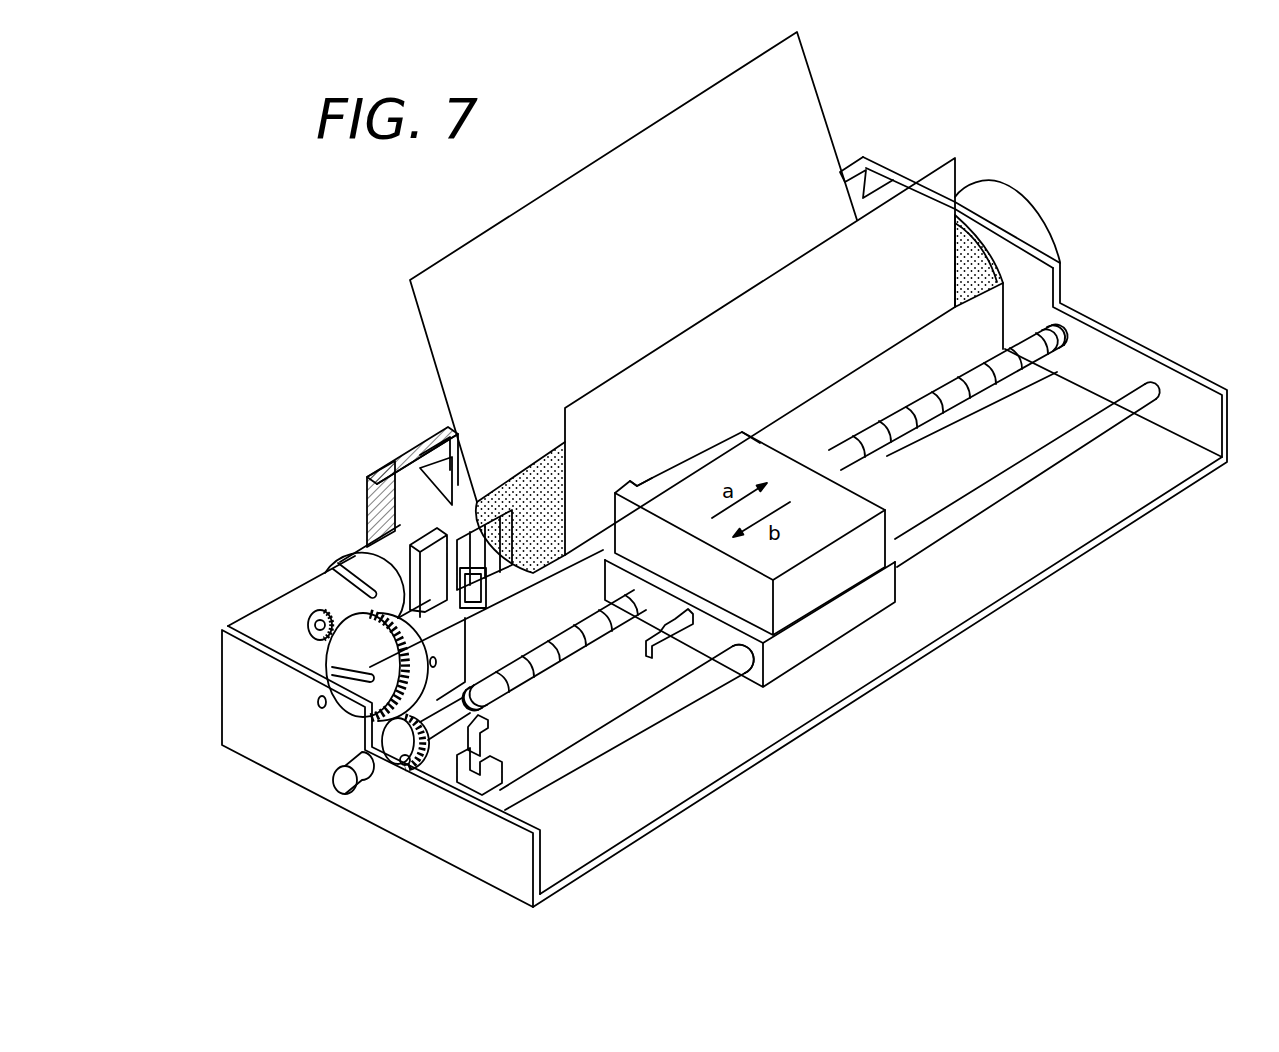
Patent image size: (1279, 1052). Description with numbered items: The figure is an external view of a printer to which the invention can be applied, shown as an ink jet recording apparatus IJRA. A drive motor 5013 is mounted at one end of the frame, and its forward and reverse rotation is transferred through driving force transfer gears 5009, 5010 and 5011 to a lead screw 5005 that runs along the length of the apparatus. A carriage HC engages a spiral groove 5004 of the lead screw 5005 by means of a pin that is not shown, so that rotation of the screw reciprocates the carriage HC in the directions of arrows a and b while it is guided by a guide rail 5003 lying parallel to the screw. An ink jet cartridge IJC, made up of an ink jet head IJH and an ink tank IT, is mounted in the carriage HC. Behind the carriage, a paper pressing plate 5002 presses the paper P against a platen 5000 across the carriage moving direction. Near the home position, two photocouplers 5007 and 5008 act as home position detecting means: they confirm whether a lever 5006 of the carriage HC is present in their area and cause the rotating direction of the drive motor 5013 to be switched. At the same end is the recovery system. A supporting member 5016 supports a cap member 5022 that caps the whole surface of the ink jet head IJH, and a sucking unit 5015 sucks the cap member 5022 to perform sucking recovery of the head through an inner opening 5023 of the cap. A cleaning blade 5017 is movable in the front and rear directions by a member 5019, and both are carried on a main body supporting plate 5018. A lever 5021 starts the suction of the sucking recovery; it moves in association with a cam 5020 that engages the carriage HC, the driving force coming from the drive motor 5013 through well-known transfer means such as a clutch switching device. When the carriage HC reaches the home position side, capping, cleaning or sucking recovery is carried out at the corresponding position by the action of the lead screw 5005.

The paper P is at (812, 110).
The ink jet recording apparatus IJRA is at (915, 153).
The platen 5000 is at (980, 267).
The paper pressing plate 5002 is at (890, 372).
The guide rail 5003 is at (627, 725).
The spiral groove 5004 is at (552, 618).
The lead screw 5005 is at (657, 642).
The lever 5006 is at (723, 653).
The photocoupler 5007 is at (482, 743).
The photocoupler 5008 is at (478, 787).
The driving force transfer gear 5009 is at (407, 750).
The driving force transfer gear 5010 is at (372, 707).
The driving force transfer gear 5011 is at (340, 655).
The drive motor 5013 is at (427, 547).
The sucking unit 5015 is at (367, 492).
The supporting member 5016 is at (430, 475).
The cleaning blade 5017 is at (493, 503).
The main body supporting plate 5018 is at (382, 470).
The member 5019 is at (382, 520).
The cam 5020 is at (403, 762).
The lever 5021 is at (372, 592).
The cap member 5022 is at (550, 648).
The inner opening 5023 is at (481, 615).
The ink jet cartridge IJC is at (867, 495).
The ink jet head IJH is at (643, 480).
The ink tank IT is at (757, 450).
The carriage HC is at (888, 582).